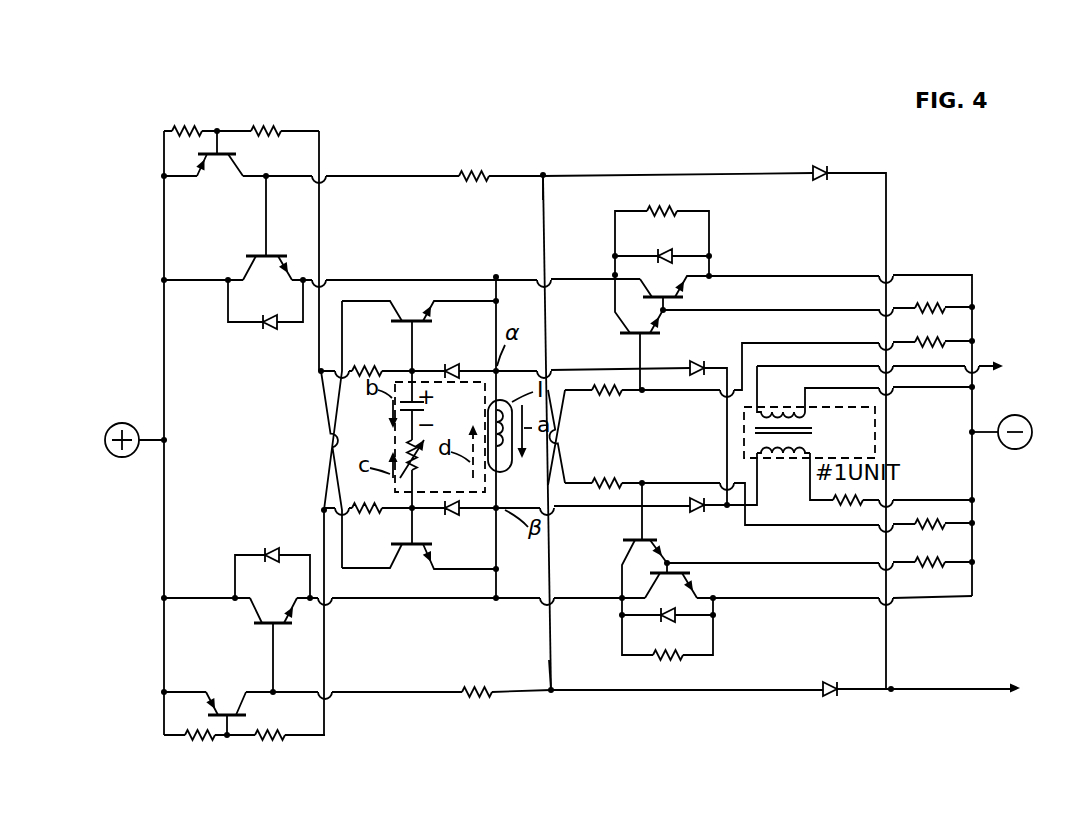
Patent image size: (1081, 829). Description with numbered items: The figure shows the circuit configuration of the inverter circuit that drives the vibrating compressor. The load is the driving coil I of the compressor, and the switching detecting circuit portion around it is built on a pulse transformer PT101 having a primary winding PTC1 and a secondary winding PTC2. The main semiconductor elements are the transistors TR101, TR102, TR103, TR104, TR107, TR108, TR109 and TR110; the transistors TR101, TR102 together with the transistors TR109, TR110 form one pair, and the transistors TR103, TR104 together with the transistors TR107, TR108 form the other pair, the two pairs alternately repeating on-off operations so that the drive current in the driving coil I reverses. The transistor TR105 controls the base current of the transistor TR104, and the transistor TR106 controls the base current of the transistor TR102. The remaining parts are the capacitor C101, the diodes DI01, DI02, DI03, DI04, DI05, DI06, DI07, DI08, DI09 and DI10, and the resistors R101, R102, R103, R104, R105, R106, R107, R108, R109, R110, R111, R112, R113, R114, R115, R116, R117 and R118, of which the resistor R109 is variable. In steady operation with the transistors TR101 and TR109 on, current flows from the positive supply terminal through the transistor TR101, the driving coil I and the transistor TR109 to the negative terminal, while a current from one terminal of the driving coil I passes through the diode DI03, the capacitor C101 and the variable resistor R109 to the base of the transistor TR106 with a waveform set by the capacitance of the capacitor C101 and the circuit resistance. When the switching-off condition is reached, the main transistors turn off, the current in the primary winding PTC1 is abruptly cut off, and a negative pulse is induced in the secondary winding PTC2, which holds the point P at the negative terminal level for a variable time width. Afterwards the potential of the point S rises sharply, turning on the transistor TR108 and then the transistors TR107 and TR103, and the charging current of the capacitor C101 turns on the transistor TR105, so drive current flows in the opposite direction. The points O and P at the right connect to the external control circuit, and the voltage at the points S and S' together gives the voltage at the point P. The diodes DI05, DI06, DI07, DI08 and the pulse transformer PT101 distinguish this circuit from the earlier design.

The resistor R101 is at (187, 126).
The resistor R102 is at (266, 126).
The resistor R103 is at (200, 742).
The resistor R104 is at (270, 742).
The resistor R105 is at (368, 376).
The resistor R106 is at (370, 520).
The resistor R107 is at (474, 171).
The resistor R108 is at (477, 686).
The variable resistor R109 is at (424, 468).
The resistor R110 is at (612, 395).
The resistor R111 is at (618, 440).
The resistor R112 is at (668, 206).
The resistor R113 is at (680, 660).
The resistor R114 is at (848, 507).
The resistor R115 is at (935, 292).
The resistor R116 is at (940, 548).
The resistor R117 is at (935, 325).
The resistor R118 is at (930, 515).
The transistor TR101 is at (248, 258).
The transistor TR102 is at (222, 160).
The transistor TR103 is at (262, 620).
The transistor TR104 is at (228, 706).
The transistor TR105 is at (412, 316).
The transistor TR106 is at (412, 556).
The transistor TR107 is at (678, 298).
The transistor TR108 is at (630, 333).
The transistor TR109 is at (690, 576).
The transistor TR110 is at (660, 545).
The diode DI01 is at (268, 330).
The diode DI02 is at (272, 548).
The diode DI03 is at (452, 362).
The diode DI04 is at (452, 516).
The diode DI05 is at (697, 361).
The diode DI06 is at (697, 498).
The diode DI07 is at (822, 180).
The diode DI08 is at (830, 682).
The diode DI09 is at (676, 240).
The diode DI10 is at (670, 622).
The capacitor C101 is at (424, 408).
The pulse transformer PT101 is at (811, 432).
The primary winding PTC1 is at (778, 458).
The secondary winding PTC2 is at (772, 410).
The driving coil I is at (500, 436).
The point S is at (548, 701).
The point S' is at (540, 158).
The point O is at (1016, 364).
The point P is at (1027, 689).